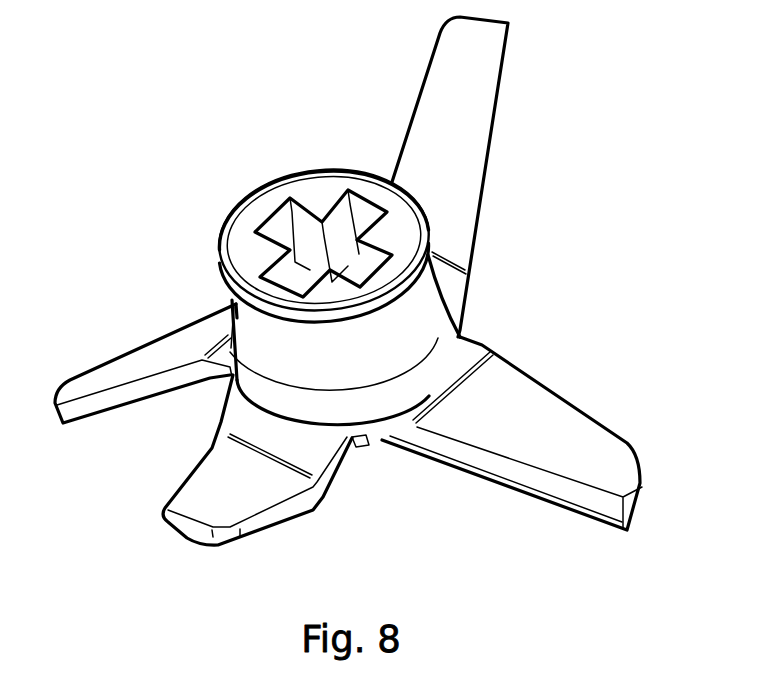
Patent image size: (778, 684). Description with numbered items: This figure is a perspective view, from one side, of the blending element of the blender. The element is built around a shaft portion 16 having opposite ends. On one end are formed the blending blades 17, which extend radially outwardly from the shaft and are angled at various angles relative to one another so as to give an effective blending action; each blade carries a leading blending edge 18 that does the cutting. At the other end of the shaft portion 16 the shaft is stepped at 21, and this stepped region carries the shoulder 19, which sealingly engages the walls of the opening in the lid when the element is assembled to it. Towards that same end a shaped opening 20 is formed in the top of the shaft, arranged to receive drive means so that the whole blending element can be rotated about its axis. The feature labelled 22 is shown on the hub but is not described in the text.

The shaft portion 16 is at (205, 293).
The blending blades 17 is at (473, 123).
The leading blending edges 18 is at (540, 498).
The shoulder 19 is at (247, 387).
The shaped opening 20 is at (333, 200).
The step 21 is at (447, 308).
The hub rim 22 is at (430, 229).